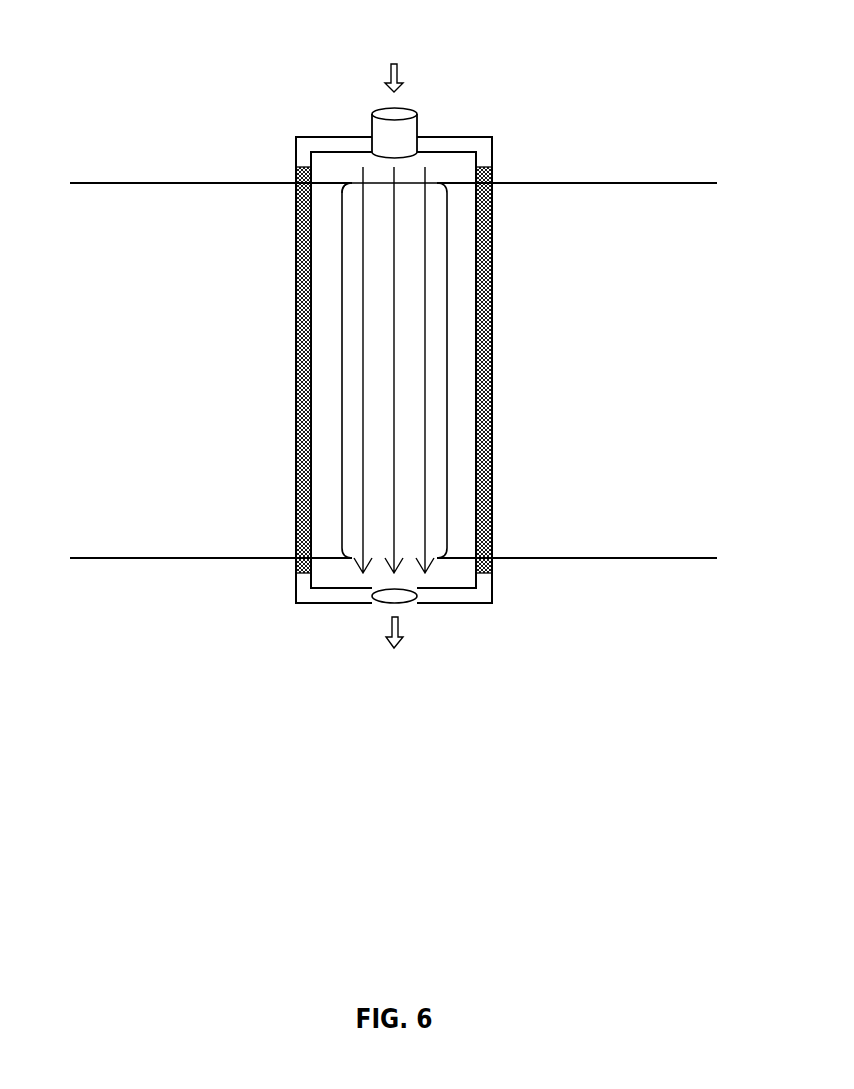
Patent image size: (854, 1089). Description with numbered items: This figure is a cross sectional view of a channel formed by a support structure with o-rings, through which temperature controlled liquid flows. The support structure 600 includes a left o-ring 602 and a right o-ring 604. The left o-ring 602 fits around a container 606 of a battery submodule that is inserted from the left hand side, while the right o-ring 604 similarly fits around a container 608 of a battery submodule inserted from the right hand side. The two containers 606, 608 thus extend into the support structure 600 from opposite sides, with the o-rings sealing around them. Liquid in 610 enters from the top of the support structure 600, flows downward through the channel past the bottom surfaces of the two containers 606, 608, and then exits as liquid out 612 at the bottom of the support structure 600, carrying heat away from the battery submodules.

The support structure 600 is at (453, 137).
The left o-ring 602 is at (297, 368).
The right o-ring 604 is at (492, 368).
The container of battery submodule on left 606 is at (183, 182).
The container of battery submodule on right 608 is at (605, 182).
The liquid in 610 is at (394, 79).
The liquid out 612 is at (394, 652).